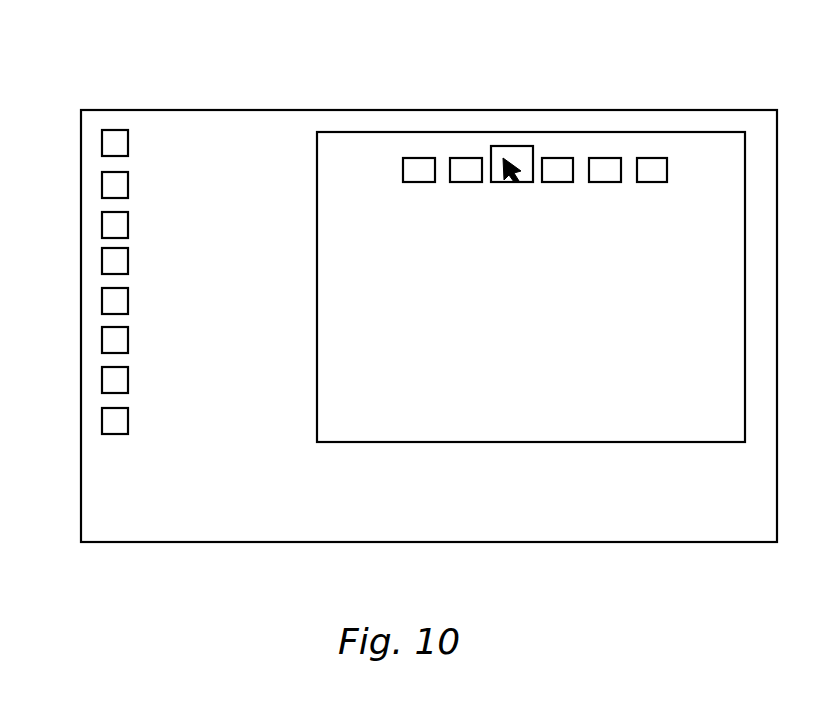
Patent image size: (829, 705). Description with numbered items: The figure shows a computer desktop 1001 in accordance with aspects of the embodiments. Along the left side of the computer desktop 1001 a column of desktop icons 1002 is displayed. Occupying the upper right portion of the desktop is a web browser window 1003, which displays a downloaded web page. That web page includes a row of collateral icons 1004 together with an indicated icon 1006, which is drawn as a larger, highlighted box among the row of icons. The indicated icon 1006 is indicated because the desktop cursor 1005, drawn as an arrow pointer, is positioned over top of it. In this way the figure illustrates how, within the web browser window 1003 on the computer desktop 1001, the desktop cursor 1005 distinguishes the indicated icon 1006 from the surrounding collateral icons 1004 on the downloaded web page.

The computer desktop 1001 is at (128, 513).
The desktop icons 1002 is at (126, 190).
The web browser window 1003 is at (355, 153).
The collateral icons 1004 is at (612, 164).
The desktop cursor 1005 is at (503, 158).
The indicated icon 1006 is at (520, 163).